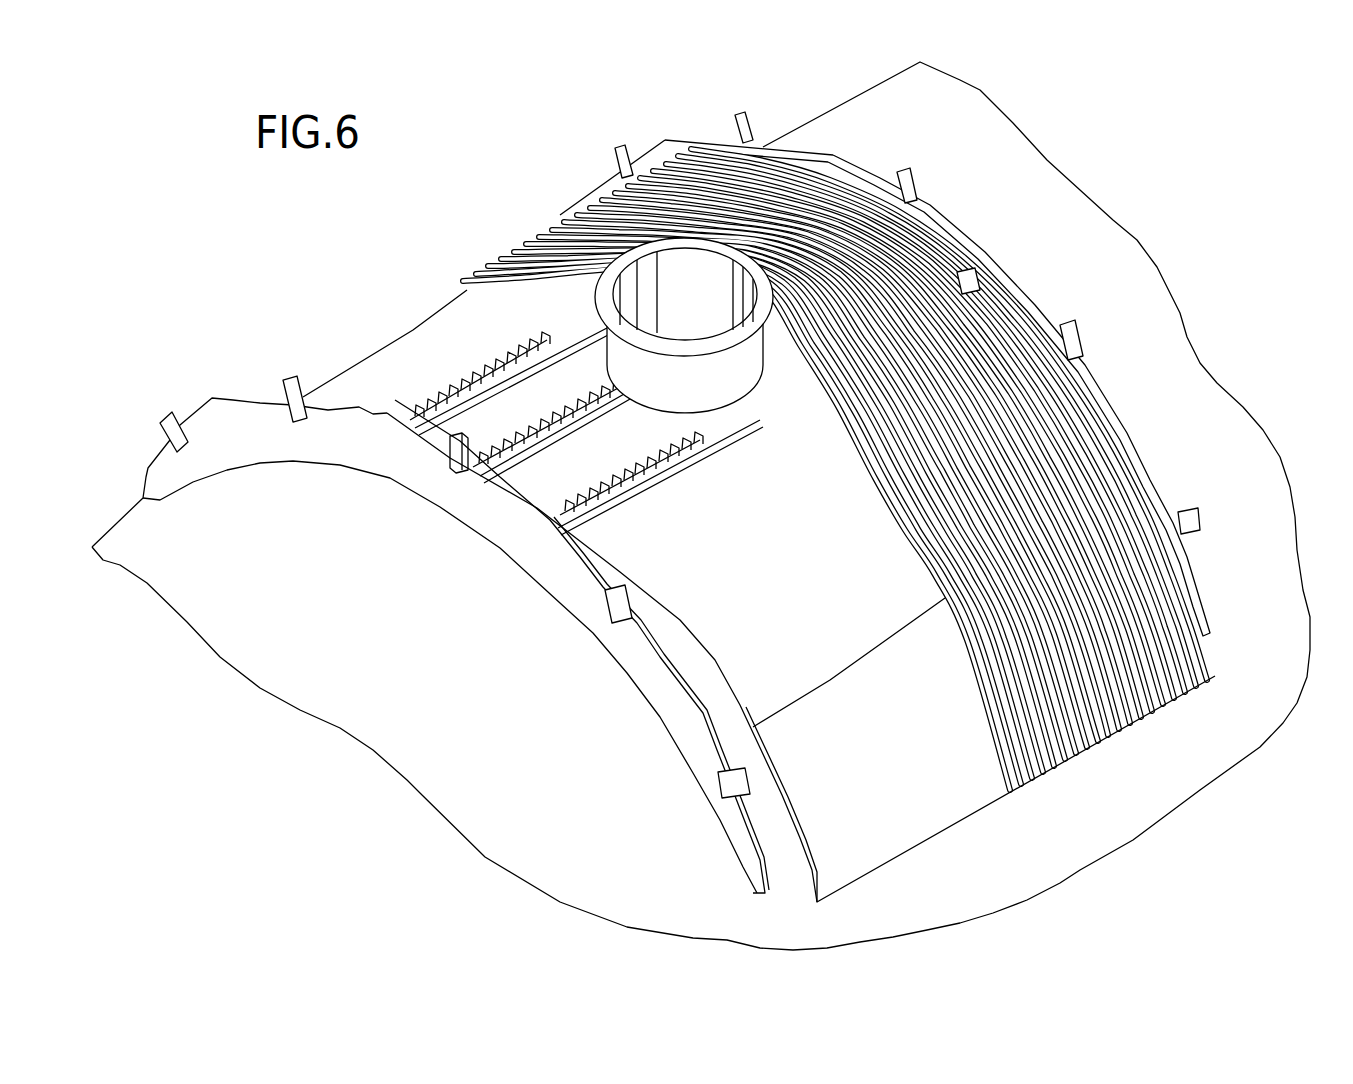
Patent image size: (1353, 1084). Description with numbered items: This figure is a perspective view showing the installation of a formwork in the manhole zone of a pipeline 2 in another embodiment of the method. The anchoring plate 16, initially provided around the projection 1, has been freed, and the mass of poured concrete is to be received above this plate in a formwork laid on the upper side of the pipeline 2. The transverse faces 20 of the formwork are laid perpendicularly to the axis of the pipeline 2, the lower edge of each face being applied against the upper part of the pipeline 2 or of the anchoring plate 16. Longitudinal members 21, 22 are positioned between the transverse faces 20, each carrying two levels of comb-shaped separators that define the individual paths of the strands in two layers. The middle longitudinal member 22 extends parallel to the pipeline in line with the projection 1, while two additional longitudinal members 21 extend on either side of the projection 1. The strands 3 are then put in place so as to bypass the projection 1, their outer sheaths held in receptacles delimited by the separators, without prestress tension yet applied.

The projection 1 is at (597, 300).
The pipeline 2 is at (1030, 182).
The strands 3 is at (1072, 477).
The anchoring plate 16 is at (945, 762).
The transverse faces 20 is at (667, 700).
The longitudinal members 21 is at (417, 432).
The middle longitudinal member 22 is at (461, 472).